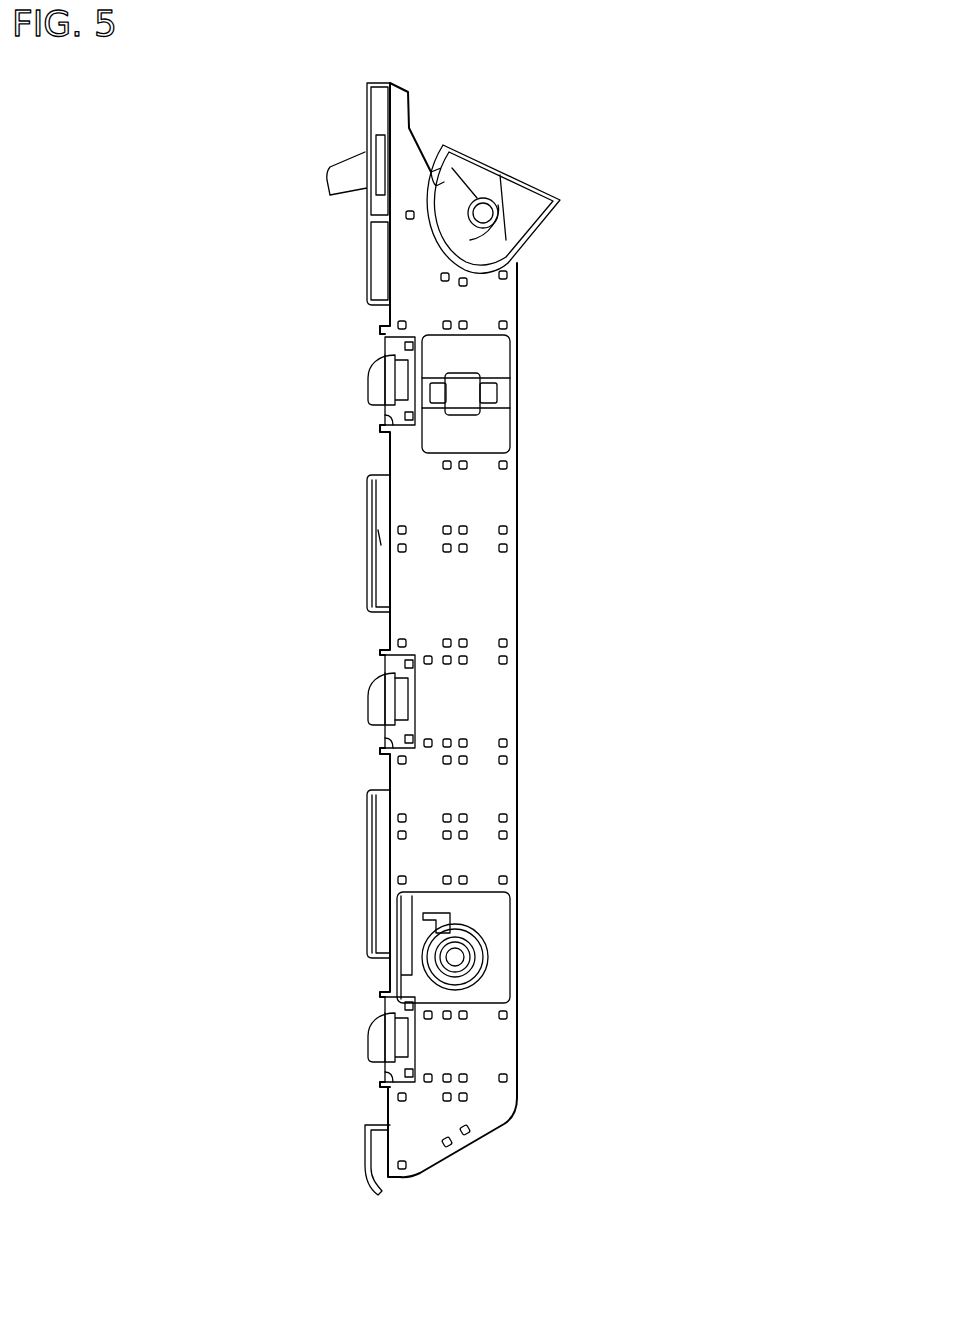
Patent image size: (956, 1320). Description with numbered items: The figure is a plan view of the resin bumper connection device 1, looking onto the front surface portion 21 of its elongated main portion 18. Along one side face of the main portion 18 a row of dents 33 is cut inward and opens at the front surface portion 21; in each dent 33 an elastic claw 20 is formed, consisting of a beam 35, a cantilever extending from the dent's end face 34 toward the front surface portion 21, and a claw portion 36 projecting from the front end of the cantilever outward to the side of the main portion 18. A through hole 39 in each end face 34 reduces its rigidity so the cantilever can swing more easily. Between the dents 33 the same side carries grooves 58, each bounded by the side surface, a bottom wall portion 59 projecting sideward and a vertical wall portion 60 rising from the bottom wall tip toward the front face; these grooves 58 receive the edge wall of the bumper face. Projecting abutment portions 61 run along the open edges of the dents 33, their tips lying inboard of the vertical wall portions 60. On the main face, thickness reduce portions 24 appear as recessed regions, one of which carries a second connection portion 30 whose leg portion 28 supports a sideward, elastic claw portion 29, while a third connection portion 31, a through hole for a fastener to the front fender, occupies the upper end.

The bumper connection device 1 is at (548, 112).
The main portion 18 is at (520, 607).
The elastic claws 20 is at (362, 378).
The front surface portion 21 is at (487, 697).
The thickness reduce portions 24 is at (520, 250).
The leg portion 28 is at (462, 405).
The claw portion 29 is at (490, 388).
The second connection portions 30 is at (628, 342).
The third connection portions 31 is at (530, 197).
The dents 33 is at (385, 412).
The end face 34 is at (385, 355).
The beam 35 is at (378, 722).
The claw portion 36 is at (375, 708).
The through hole 39 is at (390, 740).
The grooves 58 is at (358, 567).
The bottom wall portions 59 is at (372, 540).
The vertical wall portions 60 is at (367, 505).
The projecting abutment portions 61 is at (382, 330).